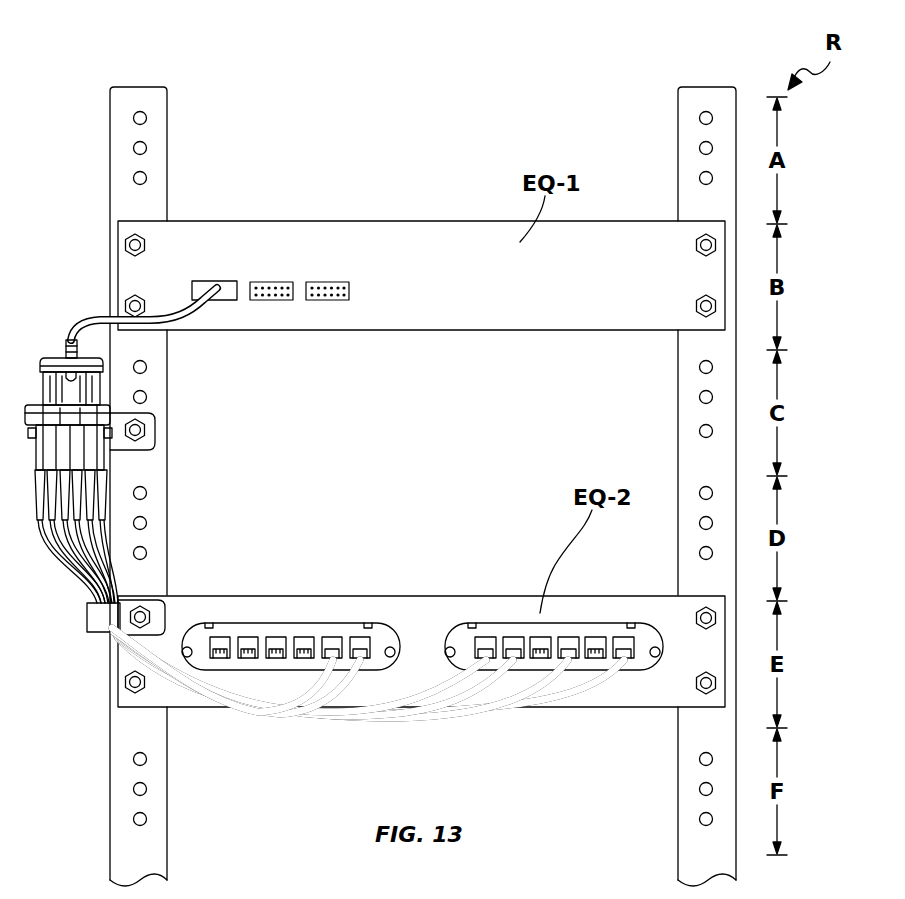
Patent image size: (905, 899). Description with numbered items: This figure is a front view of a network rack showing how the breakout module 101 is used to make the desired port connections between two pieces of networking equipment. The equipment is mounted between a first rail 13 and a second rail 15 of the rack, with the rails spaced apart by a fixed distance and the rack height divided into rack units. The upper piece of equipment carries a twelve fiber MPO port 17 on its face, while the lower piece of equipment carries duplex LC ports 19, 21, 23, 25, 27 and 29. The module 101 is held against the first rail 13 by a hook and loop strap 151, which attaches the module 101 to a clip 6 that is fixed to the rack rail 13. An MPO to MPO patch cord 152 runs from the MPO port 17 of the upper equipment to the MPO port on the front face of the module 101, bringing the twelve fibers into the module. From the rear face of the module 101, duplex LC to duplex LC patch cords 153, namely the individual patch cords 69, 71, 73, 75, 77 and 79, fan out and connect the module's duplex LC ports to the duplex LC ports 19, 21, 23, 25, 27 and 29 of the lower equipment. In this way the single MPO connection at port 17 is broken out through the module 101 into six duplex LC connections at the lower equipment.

The first rail 13 is at (130, 92).
The second rail 15 is at (698, 96).
The twelve fiber MPO port 17 is at (220, 268).
The module 101 is at (52, 322).
The MPO to MPO patch cord 152 is at (212, 304).
The hook and loop strap 151 is at (112, 412).
The clip 6 is at (125, 439).
The duplex LC to duplex LC patch cords 153 is at (62, 568).
The duplex LC port 19 is at (335, 640).
The duplex LC port 21 is at (363, 640).
The duplex LC port 23 is at (488, 640).
The duplex LC port 25 is at (516, 640).
The duplex LC port 27 is at (570, 640).
The duplex LC port 29 is at (624, 640).
The patch cord 69 is at (266, 713).
The patch cord 71 is at (295, 712).
The patch cord 73 is at (342, 710).
The patch cord 75 is at (405, 716).
The patch cord 77 is at (505, 722).
The patch cord 79 is at (557, 708).